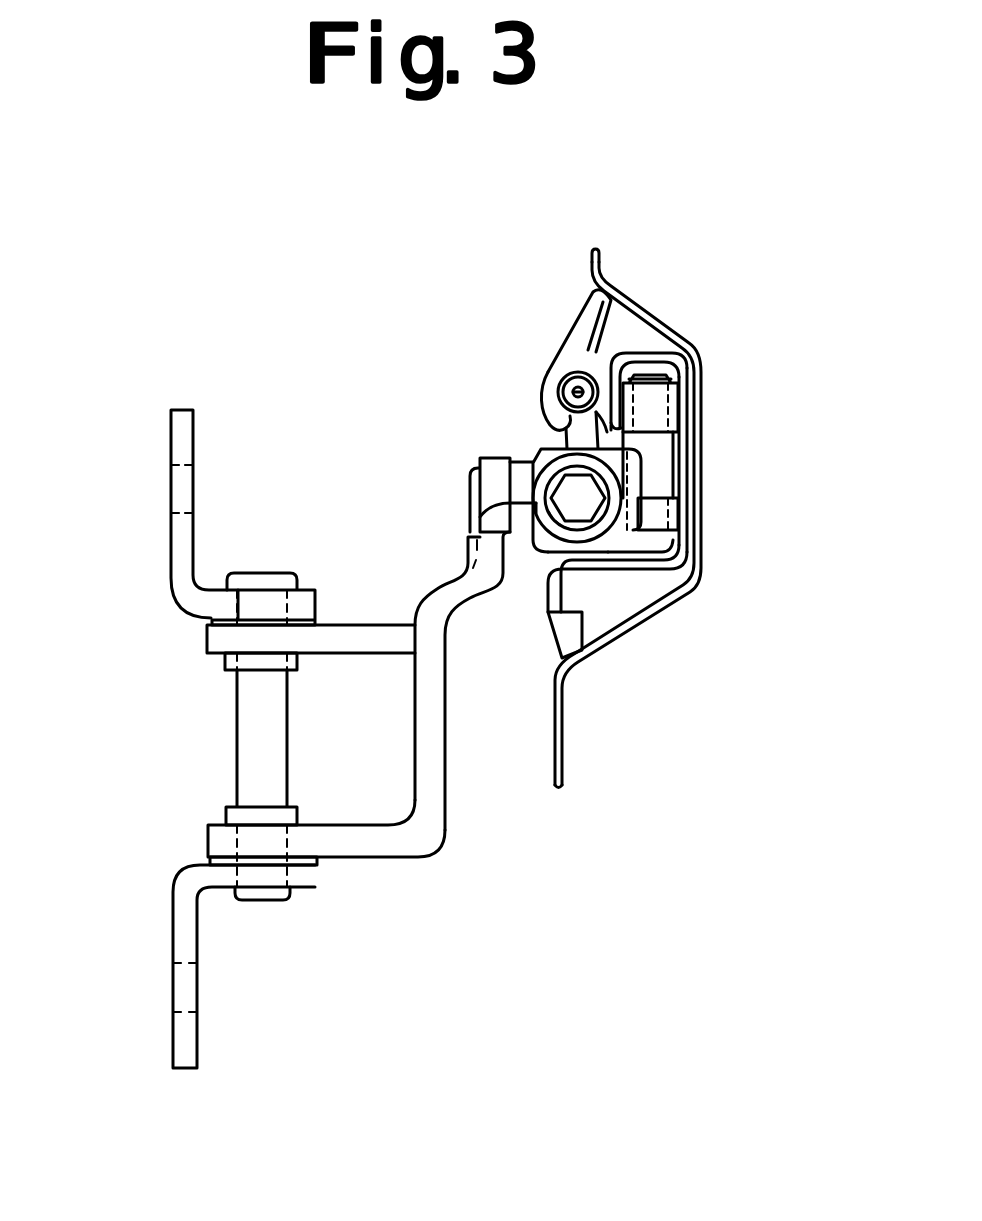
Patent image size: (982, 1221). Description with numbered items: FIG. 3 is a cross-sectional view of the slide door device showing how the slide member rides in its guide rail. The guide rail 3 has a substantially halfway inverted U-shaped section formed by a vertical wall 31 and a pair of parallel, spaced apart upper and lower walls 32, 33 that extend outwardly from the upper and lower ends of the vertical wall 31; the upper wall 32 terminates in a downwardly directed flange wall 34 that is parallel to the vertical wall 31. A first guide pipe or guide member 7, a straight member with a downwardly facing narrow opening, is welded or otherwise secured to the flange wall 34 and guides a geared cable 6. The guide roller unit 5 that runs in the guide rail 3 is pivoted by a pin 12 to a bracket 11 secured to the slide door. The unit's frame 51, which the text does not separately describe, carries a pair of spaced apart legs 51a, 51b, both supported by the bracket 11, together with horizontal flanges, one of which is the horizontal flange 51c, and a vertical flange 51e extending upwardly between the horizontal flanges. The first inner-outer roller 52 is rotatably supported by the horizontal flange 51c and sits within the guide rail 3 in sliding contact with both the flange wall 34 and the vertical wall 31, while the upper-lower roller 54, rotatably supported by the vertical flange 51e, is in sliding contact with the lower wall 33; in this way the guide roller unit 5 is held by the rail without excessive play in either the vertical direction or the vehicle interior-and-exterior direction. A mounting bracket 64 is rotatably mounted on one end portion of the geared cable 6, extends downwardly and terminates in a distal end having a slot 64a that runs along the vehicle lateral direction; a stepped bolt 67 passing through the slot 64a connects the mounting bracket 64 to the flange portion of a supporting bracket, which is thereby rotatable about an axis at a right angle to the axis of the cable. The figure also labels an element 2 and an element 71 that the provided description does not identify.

The panel 2 is at (653, 305).
The guide rail 3 is at (643, 594).
The guide roller unit 5 is at (426, 478).
The geared cable 6 is at (550, 387).
The first guide member 7 is at (633, 302).
The bracket 11 is at (183, 930).
The pin 12 is at (250, 753).
The vertical wall 31 is at (688, 468).
The upper wall 32 is at (657, 350).
The lower wall 33 is at (653, 565).
The flange wall 34 is at (557, 358).
The mounting bracket 51 is at (444, 861).
The leg 51a is at (367, 643).
The leg 51b is at (358, 843).
The horizontal flange 51c is at (679, 515).
The vertical flange 51e is at (490, 470).
The first inner-outer roller 52 is at (675, 402).
The upper-lower roller 54 is at (608, 552).
The mounting bracket 64 is at (547, 438).
The slot 64a is at (686, 548).
The stepped bolt 67 is at (550, 507).
The housing hook 71 is at (613, 424).